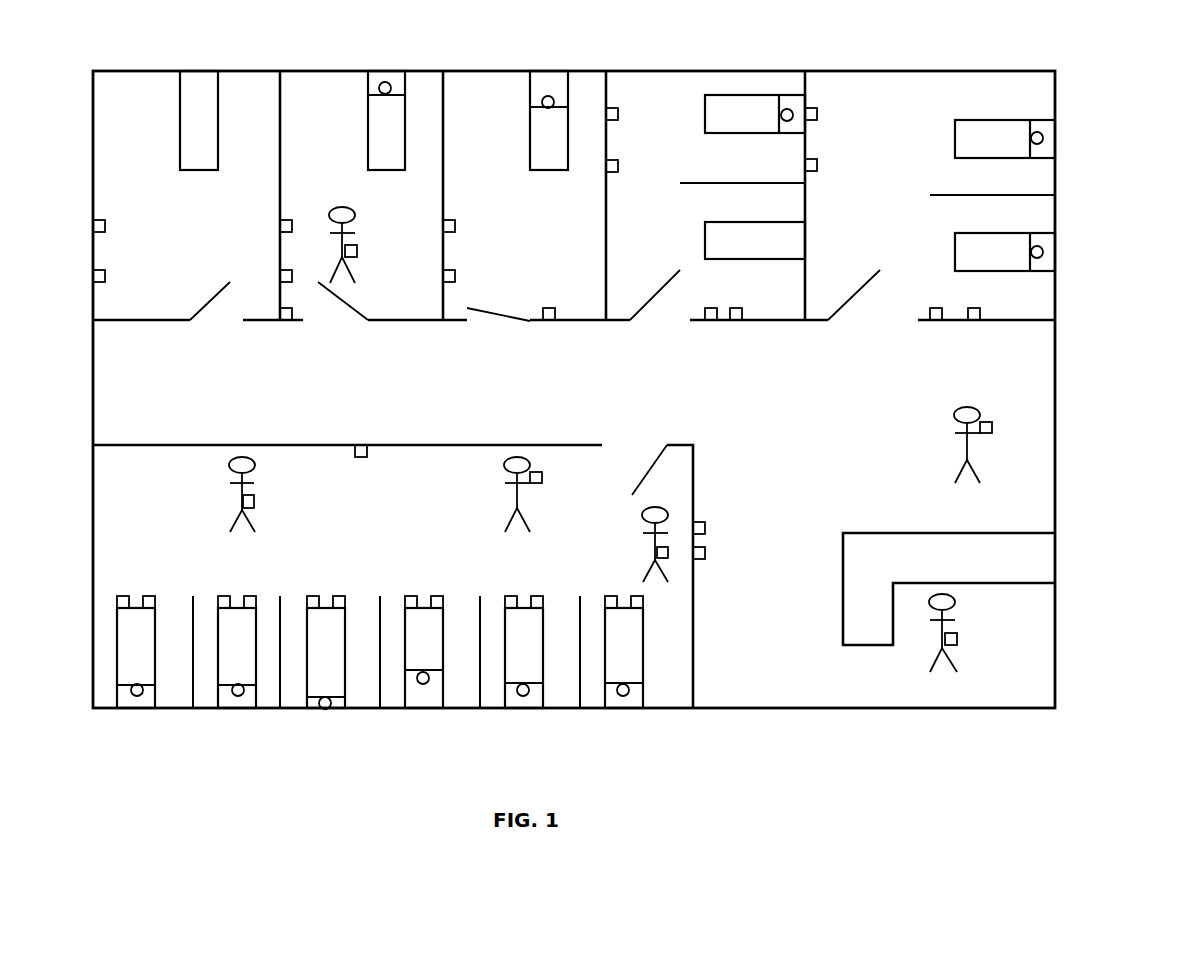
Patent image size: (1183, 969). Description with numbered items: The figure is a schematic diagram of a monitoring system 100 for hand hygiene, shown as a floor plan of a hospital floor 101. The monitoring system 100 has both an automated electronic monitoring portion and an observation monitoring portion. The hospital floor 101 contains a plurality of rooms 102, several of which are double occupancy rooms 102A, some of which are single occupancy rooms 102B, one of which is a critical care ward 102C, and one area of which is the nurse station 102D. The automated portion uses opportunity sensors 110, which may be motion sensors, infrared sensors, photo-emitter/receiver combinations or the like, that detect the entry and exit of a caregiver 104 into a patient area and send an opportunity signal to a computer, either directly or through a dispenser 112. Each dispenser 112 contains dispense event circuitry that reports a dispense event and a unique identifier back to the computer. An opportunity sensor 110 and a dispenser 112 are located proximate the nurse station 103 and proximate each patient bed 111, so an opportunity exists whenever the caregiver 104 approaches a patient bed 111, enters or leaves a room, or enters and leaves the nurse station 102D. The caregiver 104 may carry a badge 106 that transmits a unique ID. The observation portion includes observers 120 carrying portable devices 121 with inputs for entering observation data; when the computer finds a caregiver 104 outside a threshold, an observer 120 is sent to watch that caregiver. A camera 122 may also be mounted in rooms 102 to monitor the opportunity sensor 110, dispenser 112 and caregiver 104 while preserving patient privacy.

The monitoring system 100 is at (1097, 119).
The hospital floor 101 is at (1055, 477).
The room 102 is at (145, 181).
The double occupancy room 102A is at (690, 243).
The single occupancy room 102B is at (589, 258).
The critical care ward 102C is at (403, 521).
The nurse station 102D is at (816, 495).
The nurse station 103 is at (843, 596).
The caregiver 104 is at (355, 233).
The badge 106 is at (357, 257).
The opportunity sensor 110 is at (107, 275).
The patient bed 111 is at (530, 107).
The dispenser 112 is at (107, 225).
The observer 120 is at (518, 495).
The portable device 121 is at (542, 478).
The camera 122 is at (289, 322).